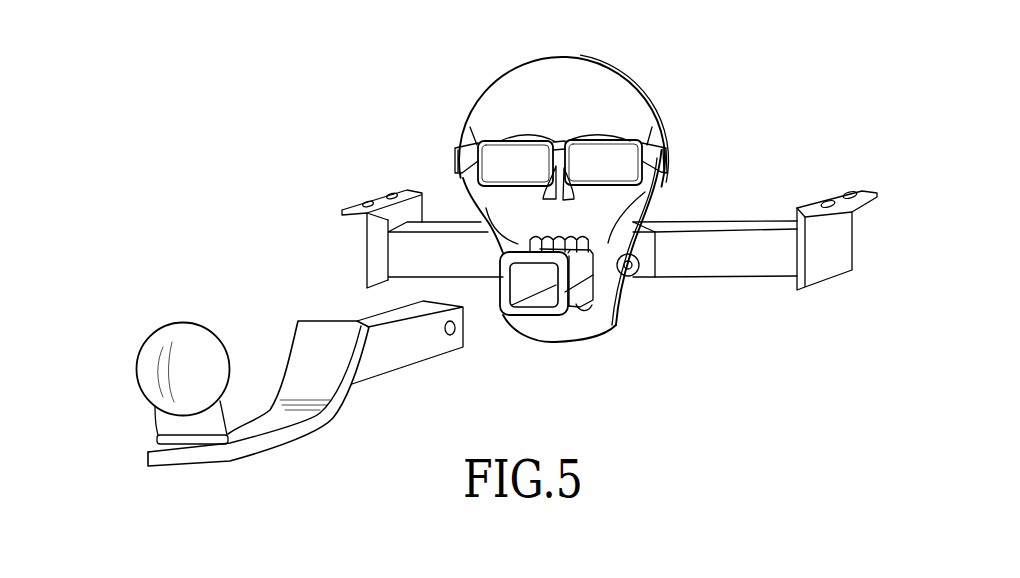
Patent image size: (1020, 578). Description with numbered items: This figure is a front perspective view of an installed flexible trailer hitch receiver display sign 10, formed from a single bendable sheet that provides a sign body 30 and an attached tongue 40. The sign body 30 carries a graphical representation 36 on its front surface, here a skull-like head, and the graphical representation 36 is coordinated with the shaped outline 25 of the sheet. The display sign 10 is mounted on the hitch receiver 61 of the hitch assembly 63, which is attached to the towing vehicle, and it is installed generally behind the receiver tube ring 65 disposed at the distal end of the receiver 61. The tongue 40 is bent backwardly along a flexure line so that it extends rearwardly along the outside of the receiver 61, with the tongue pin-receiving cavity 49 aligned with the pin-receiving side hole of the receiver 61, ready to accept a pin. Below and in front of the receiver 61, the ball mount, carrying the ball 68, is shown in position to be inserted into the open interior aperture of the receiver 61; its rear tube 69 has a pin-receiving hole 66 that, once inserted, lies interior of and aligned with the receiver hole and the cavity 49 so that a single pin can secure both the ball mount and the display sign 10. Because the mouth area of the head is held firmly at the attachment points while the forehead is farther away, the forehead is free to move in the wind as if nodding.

The flexible trailer hitch receiver display sign 10 is at (633, 60).
The shaped outline 25 is at (477, 98).
The sign body 30 is at (616, 207).
The graphical representation 36 is at (572, 106).
The tongue 40 is at (644, 248).
The tongue pin-receiving cavity 49 is at (624, 270).
The hitch receiver 61 is at (645, 266).
The hitch assembly 63 is at (743, 260).
The receiver tube ring 65 is at (568, 290).
The pin-receiving hole 66 is at (453, 337).
The ball 68 is at (170, 373).
The rear tube 69 is at (367, 363).